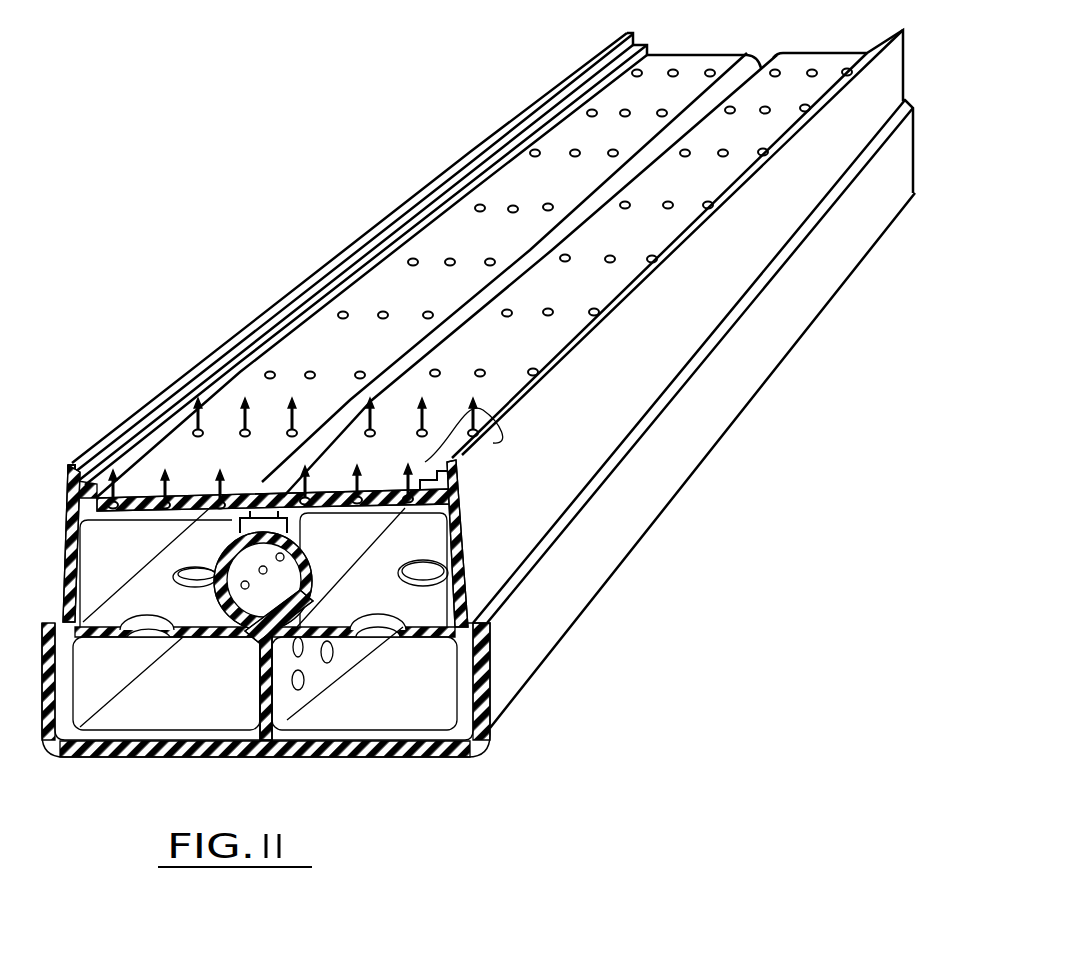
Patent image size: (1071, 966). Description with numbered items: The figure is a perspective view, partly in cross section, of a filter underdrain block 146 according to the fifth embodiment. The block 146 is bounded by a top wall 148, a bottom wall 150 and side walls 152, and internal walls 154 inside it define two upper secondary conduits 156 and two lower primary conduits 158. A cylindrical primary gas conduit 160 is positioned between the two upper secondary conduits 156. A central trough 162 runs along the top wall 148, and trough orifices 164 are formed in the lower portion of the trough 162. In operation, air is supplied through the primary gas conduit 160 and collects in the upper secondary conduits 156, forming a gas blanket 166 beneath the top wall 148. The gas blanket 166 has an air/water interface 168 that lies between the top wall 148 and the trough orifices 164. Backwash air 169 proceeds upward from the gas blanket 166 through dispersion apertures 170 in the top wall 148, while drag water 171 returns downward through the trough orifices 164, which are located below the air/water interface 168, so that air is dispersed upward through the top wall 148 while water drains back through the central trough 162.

The block 146 is at (147, 330).
The top wall 148 is at (404, 290).
The bottom wall 150 is at (248, 752).
The side walls 152 is at (87, 640).
The internal walls 154 is at (487, 665).
The upper secondary conduits 156 is at (183, 607).
The lower primary conduits 158 is at (220, 701).
The primary gas conduit 160 is at (470, 595).
The central trough 162 is at (460, 326).
The trough orifices 164 is at (293, 488).
The gas blanket 166 is at (137, 497).
The air/water interface 168 is at (187, 497).
The backwash air 169 is at (490, 415).
The dispersion apertures 170 is at (268, 372).
The drag water 171 is at (257, 497).